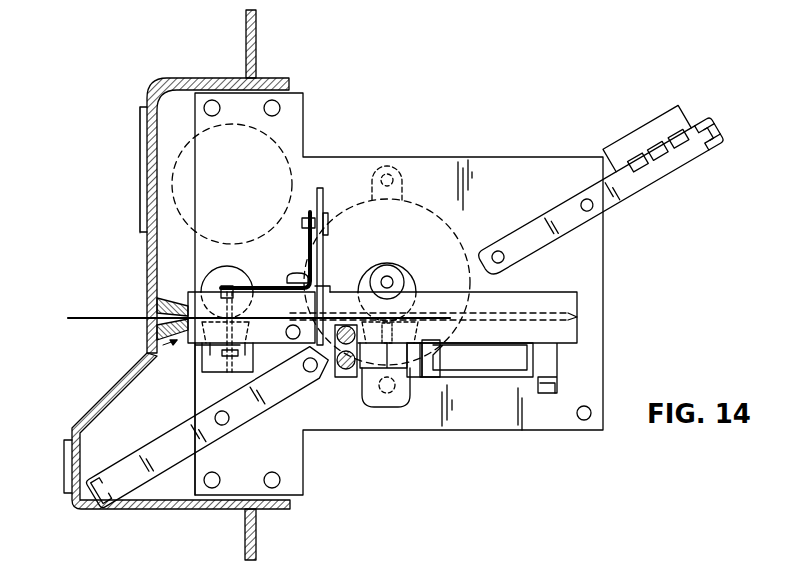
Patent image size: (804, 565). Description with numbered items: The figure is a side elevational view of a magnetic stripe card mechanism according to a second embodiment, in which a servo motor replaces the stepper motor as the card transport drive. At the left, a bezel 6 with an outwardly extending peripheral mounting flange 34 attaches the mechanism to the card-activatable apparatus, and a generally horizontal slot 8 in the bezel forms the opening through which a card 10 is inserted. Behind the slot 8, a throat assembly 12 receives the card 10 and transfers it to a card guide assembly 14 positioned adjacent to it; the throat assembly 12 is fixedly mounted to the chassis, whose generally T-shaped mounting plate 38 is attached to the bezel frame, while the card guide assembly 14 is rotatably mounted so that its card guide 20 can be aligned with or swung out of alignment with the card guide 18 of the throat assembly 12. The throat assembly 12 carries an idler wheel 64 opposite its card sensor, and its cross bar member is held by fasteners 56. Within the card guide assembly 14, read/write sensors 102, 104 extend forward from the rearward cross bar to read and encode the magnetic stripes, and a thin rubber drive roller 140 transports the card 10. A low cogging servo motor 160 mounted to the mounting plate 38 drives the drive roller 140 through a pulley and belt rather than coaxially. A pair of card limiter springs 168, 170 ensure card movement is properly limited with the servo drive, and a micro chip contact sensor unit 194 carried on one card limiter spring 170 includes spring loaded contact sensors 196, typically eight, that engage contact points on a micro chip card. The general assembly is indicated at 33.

The bezel 6 is at (213, 52).
The mounting flange 34 is at (256, 30).
The mounting plate 38 is at (500, 167).
The servo motor 160 is at (177, 172).
The feed mechanism 33 is at (133, 265).
The card 10 is at (74, 316).
The slot 8 is at (145, 320).
The throat assembly 12 is at (150, 355).
The card guide 20 is at (580, 317).
The fasteners 56 is at (213, 370).
The idler wheel 64 is at (230, 276).
The card guide 18 is at (284, 282).
The drive roller 140 is at (386, 270).
The read/write sensor 102 is at (434, 401).
The read/write sensor 104 is at (372, 390).
The card limiter spring 168 is at (148, 470).
The card limiter spring 170 is at (700, 150).
The micro chip contact sensor unit 194 is at (633, 136).
The spring loaded contact sensors 196 is at (667, 158).
The card guide assembly 14 is at (573, 282).